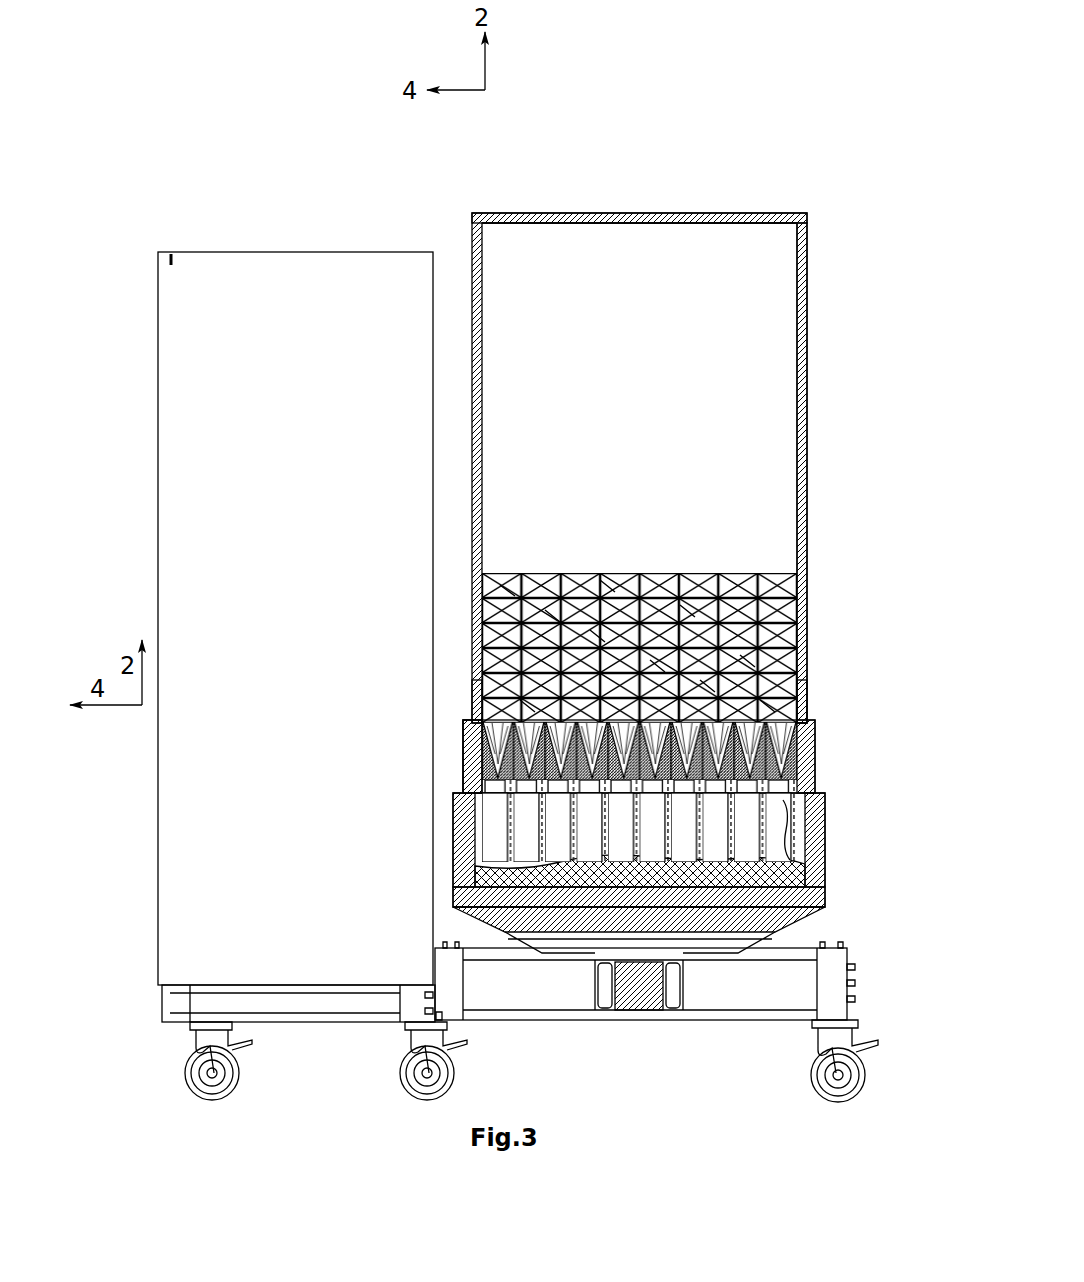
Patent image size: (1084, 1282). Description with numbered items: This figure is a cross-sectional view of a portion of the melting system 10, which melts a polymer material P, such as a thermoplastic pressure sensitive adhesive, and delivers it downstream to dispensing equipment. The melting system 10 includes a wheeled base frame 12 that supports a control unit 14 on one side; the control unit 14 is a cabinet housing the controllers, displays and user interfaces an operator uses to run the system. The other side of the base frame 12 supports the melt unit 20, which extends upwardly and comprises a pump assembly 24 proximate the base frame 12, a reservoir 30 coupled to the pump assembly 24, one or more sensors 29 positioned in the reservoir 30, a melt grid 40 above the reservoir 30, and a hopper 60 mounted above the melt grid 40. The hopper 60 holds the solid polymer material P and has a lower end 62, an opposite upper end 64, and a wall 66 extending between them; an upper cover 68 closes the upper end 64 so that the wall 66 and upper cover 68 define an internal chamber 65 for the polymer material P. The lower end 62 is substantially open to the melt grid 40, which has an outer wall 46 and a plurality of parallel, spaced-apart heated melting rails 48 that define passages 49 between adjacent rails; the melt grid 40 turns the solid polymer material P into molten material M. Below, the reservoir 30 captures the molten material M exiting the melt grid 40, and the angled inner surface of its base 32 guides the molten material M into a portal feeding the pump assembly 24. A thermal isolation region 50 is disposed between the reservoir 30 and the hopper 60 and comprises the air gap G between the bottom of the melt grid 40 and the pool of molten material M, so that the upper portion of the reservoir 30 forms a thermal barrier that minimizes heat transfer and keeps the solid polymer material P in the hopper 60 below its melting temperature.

The melting system 10 is at (287, 611).
The base frame 12 is at (183, 995).
The control unit 14 is at (295, 618).
The melt unit 20 is at (695, 424).
The pump assembly 24 is at (644, 1023).
The sensor 29 is at (864, 901).
The reservoir 30 is at (640, 850).
The base 32 is at (800, 918).
The melt grid 40 is at (820, 769).
The outer wall 46 is at (633, 712).
The melting rails 48 is at (478, 718).
The passages 49 is at (470, 900).
The thermal isolation region 50 is at (832, 806).
The hopper 60 is at (695, 424).
The lower end 62 is at (812, 702).
The upper end 64 is at (732, 210).
The internal chamber 65 is at (736, 366).
The wall 66 is at (806, 263).
The upper cover 68 is at (655, 224).
The polymer material P is at (658, 573).
The molten material M is at (480, 862).
The gap G is at (806, 830).